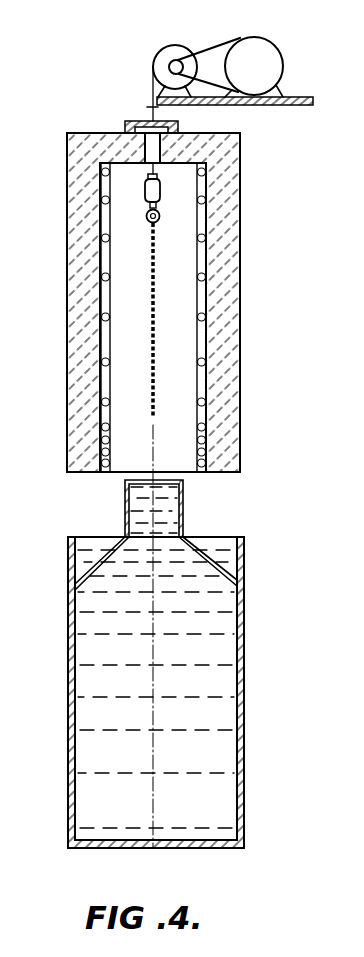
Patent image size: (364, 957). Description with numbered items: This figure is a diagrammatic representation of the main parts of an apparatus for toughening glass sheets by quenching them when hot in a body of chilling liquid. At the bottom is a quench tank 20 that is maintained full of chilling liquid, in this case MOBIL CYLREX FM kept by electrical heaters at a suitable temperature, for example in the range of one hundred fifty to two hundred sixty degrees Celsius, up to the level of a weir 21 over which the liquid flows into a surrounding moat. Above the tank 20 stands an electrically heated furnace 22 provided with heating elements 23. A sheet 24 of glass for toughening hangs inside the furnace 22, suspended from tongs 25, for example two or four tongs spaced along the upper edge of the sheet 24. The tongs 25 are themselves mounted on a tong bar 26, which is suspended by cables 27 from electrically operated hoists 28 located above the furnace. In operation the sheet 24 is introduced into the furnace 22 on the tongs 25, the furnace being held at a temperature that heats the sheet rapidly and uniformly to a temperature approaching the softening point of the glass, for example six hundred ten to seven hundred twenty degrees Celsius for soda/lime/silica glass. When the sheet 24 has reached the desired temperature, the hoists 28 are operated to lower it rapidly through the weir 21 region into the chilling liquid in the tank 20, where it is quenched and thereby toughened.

The quench tank 20 is at (238, 643).
The weir 21 is at (184, 503).
The electrically heated furnace 22 is at (222, 406).
The heating elements 23 is at (103, 237).
The sheet of glass 24 is at (157, 315).
The tongs 25 is at (159, 215).
The tong bar 26 is at (158, 180).
The cables 27 is at (150, 112).
The electrically operated hoists 28 is at (163, 55).